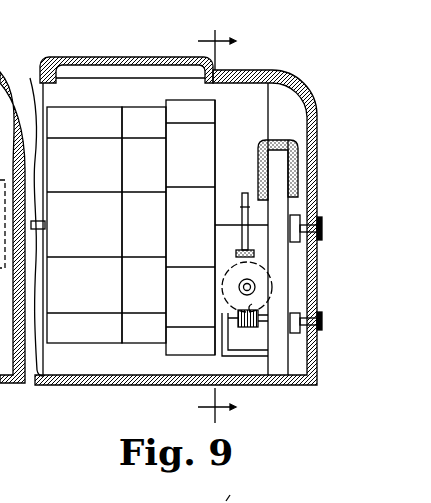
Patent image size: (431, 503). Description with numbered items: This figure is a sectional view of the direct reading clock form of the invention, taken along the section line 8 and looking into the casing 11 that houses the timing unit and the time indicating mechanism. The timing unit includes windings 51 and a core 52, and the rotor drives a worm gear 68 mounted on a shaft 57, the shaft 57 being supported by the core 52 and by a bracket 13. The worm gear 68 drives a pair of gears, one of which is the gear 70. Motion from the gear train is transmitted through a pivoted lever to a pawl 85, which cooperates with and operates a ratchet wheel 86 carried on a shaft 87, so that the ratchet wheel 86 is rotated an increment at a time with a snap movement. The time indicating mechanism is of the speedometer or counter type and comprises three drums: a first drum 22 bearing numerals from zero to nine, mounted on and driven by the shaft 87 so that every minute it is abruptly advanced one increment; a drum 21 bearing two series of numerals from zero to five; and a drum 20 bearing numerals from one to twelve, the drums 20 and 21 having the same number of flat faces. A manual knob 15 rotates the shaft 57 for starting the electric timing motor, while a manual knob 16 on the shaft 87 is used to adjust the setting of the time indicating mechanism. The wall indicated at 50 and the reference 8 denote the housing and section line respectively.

The section line 8- 8 is at (225, 226).
The casing 11 is at (239, 491).
The bracket 13 is at (230, 352).
The manual knob 15 is at (322, 321).
The manual knob 16 is at (322, 226).
The drum 20 is at (75, 107).
The drum 21 is at (135, 107).
The drum 22 is at (207, 99).
The housing wall 50 is at (293, 353).
The windings 51 is at (286, 139).
The core 52 is at (287, 205).
The shaft 57 is at (262, 330).
The worm gear 68 is at (248, 308).
The gear 70 is at (255, 270).
The pawl 85 is at (237, 256).
The ratchet wheel 86 is at (245, 198).
The shaft 87 is at (30, 82).